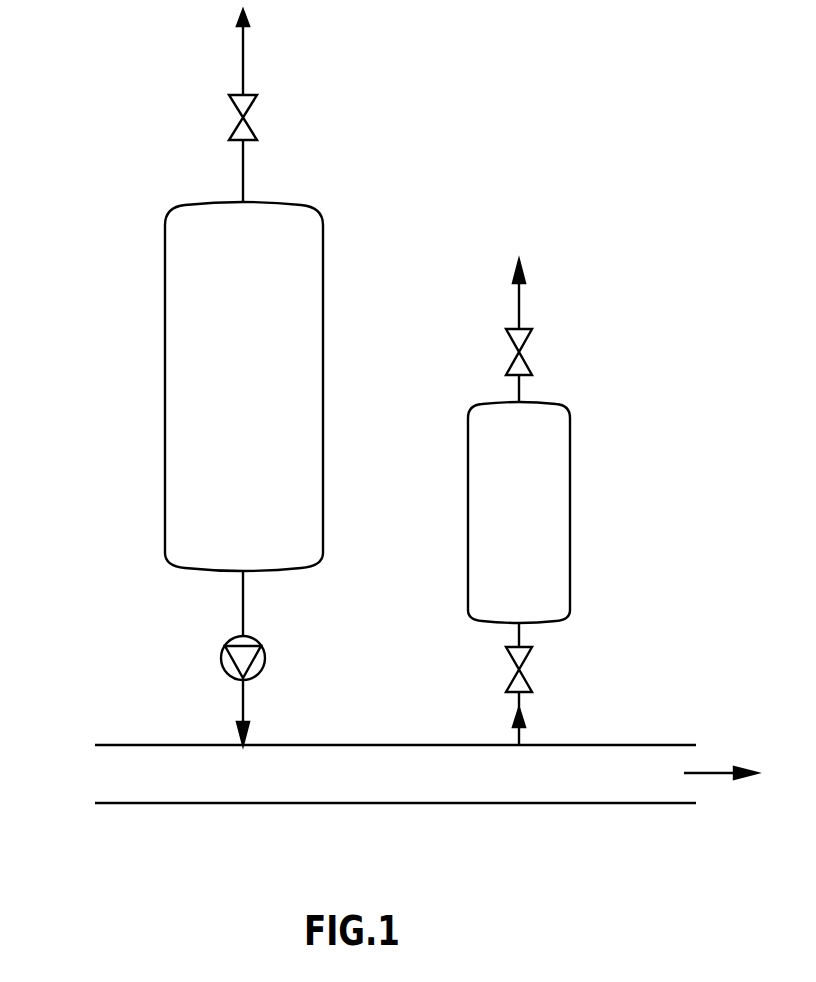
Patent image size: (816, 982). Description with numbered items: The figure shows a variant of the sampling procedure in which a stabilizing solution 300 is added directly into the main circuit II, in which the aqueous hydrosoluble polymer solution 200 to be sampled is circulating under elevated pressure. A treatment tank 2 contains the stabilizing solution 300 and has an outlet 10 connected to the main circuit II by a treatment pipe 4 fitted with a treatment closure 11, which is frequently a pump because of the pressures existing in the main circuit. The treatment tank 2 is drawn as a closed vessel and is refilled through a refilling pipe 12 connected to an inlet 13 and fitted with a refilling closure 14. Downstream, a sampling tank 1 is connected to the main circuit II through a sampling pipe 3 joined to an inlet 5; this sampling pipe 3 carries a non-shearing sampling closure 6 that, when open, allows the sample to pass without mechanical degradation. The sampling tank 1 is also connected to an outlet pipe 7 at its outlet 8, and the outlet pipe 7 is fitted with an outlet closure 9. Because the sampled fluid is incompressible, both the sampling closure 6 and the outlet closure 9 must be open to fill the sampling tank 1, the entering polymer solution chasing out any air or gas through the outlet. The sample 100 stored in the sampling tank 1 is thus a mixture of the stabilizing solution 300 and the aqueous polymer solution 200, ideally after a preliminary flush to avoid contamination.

The sampling tank 1 is at (548, 464).
The treatment tank 2 is at (288, 378).
The sampling pipe 3 is at (523, 637).
The treatment pipe 4 is at (243, 712).
The inlet 5 is at (514, 629).
The sampling closure 6 is at (513, 685).
The outlet pipe 7 is at (519, 302).
The outlet 8 is at (522, 402).
The outlet closure 9 is at (514, 338).
The outlet 10 is at (243, 572).
The treatment closure 11 is at (226, 664).
The refilling pipe 12 is at (243, 68).
The inlet 13 is at (243, 203).
The refilling closure 14 is at (240, 104).
The sample 100 is at (522, 698).
The aqueous hydrosoluble polymer solution 200 is at (108, 775).
The stabilizing solution 300 is at (190, 310).
The main circuit II is at (113, 812).